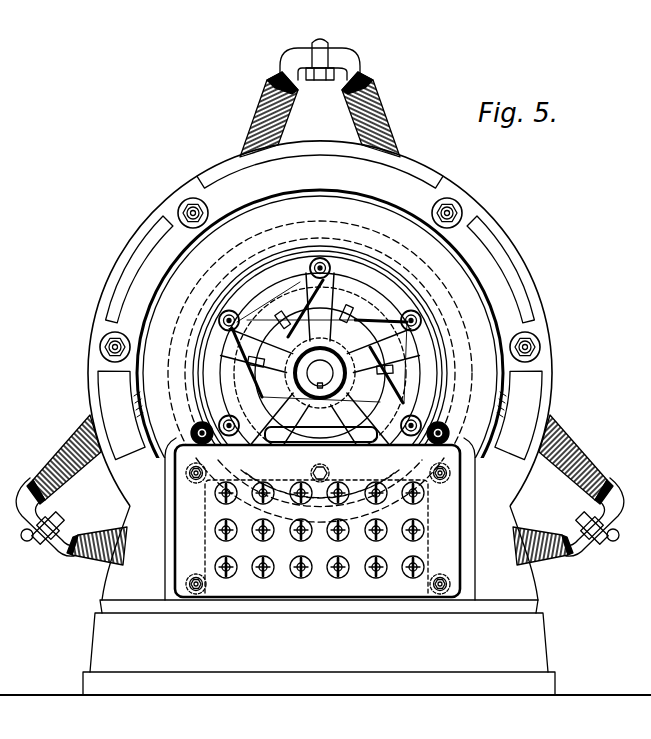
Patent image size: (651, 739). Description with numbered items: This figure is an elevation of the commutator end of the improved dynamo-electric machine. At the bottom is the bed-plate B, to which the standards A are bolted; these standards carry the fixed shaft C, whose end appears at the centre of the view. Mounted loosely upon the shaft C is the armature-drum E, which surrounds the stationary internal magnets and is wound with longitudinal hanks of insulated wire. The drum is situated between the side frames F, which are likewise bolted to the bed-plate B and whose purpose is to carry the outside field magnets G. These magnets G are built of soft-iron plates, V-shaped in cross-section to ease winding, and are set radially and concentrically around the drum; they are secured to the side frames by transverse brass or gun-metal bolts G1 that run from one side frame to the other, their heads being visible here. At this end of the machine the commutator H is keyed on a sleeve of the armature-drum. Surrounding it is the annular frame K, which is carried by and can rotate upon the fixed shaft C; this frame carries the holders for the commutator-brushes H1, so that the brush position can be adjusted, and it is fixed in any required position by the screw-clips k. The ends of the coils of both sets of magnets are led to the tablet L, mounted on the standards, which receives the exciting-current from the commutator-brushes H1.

The standards A is at (477, 561).
The bed-plate B is at (325, 647).
The fixed shaft C is at (320, 373).
The armature-drum E is at (214, 308).
The side frames F is at (320, 323).
The magnets G is at (266, 113).
The transverse bolts G1 is at (189, 201).
The commutator H is at (320, 339).
The commutator-brushes H1 is at (318, 341).
The annular frame K is at (323, 347).
The screw-clips k is at (194, 428).
The tablet L is at (206, 512).